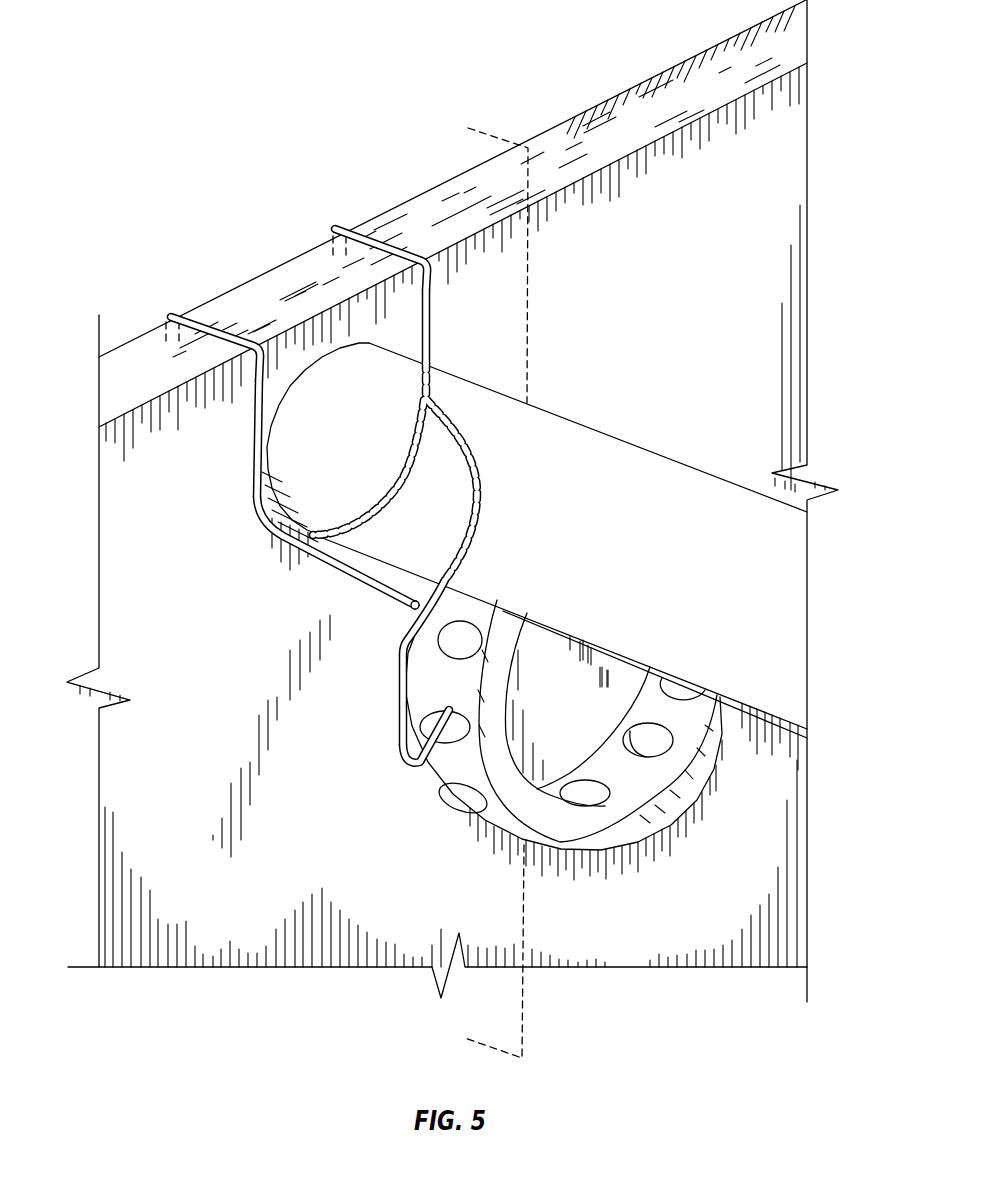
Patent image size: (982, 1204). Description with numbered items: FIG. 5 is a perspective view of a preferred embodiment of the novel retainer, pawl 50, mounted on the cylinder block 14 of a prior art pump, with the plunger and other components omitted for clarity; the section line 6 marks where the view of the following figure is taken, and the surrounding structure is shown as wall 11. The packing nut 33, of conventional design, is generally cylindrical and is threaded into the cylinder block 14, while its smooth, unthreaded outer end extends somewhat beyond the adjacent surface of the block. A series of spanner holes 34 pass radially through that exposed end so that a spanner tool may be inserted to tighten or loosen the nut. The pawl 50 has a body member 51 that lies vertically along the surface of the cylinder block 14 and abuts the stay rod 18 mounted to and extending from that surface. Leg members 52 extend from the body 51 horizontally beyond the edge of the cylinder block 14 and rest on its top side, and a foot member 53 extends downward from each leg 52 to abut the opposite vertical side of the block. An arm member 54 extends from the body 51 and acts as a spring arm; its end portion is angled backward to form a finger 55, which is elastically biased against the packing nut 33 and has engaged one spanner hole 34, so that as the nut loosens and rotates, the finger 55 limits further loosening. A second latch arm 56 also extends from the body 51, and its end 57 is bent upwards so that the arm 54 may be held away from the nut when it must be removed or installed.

The wall 11 is at (619, 91).
The cylinder block 14 is at (675, 331).
The stay rod 18 is at (629, 556).
The packing nut 33 is at (683, 779).
The spanner holes 34 is at (433, 773).
The pawl 50 is at (291, 465).
The body member 51 is at (252, 458).
The leg members 52 is at (368, 228).
The foot member 53 is at (328, 250).
The arm member 54 is at (401, 684).
The finger 55 is at (443, 712).
The latch arm 56 is at (355, 584).
The end 57 is at (408, 608).
The section line 6- 6 is at (460, 127).